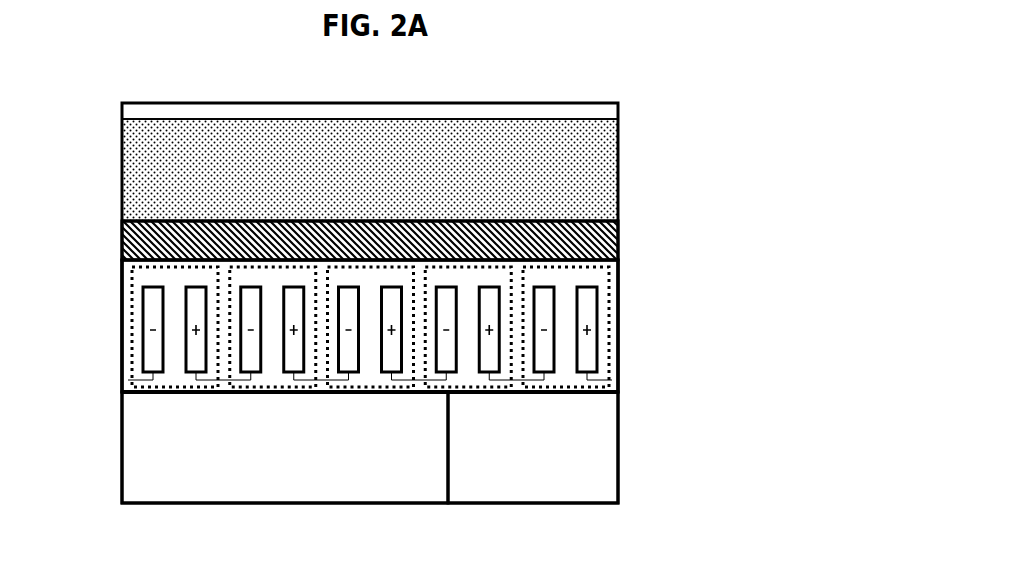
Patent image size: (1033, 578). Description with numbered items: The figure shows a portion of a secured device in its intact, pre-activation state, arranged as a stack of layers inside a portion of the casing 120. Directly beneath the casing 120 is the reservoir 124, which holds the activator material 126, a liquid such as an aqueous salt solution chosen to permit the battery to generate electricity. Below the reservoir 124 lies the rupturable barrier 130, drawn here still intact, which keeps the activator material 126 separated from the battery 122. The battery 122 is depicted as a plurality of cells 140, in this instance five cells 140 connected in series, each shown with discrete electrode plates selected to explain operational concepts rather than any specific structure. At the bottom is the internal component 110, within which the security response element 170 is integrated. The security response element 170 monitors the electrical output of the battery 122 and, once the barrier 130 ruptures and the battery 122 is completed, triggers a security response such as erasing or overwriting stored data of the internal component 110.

The internal component 110 is at (285, 447).
The casing 120 is at (618, 105).
The battery 122 is at (116, 263).
The reservoir 124 is at (118, 123).
The activator material 126 is at (600, 168).
The rupturable barrier 130 is at (618, 240).
The cells 140 is at (602, 343).
The security response element 170 is at (533, 447).